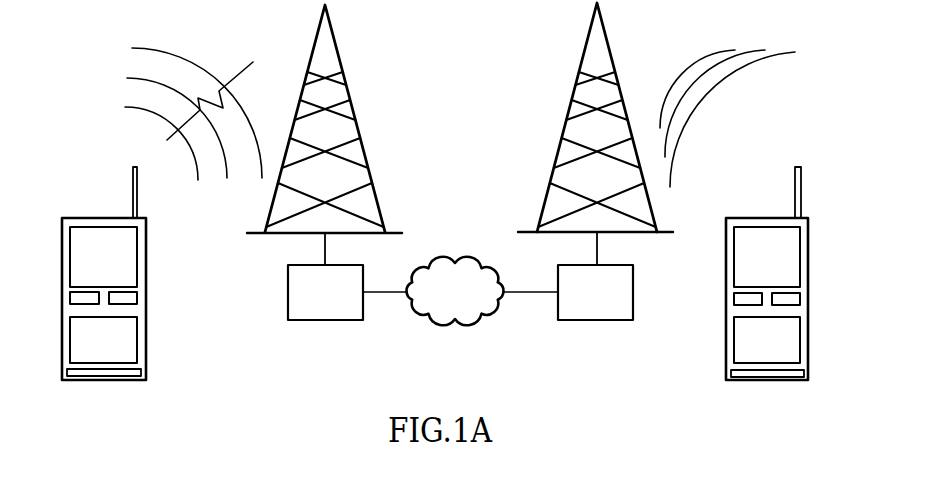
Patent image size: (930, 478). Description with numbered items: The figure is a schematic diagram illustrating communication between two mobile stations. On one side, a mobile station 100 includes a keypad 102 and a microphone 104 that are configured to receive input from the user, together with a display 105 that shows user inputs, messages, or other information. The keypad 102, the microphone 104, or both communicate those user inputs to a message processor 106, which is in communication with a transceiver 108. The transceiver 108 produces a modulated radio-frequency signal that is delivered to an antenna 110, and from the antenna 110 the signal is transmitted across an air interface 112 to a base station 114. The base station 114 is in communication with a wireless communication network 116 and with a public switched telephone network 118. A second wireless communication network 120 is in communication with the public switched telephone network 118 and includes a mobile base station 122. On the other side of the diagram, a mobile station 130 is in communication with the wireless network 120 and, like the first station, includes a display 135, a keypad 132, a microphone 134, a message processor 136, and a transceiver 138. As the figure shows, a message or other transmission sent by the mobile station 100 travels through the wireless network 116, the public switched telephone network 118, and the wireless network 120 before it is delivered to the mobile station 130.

The mobile station 100 is at (146, 243).
The keypad 102 is at (137, 336).
The microphone 104 is at (106, 376).
The display 105 is at (137, 262).
The message processor 106 is at (137, 297).
The transceiver 108 is at (70, 297).
The antenna 110 is at (133, 188).
The air interface 112 is at (234, 78).
The base station 114 is at (338, 56).
The wireless communication network 116 is at (328, 321).
The public switched telephone network (PSTN) 118 is at (442, 322).
The wireless communication network 120 is at (582, 321).
The mobile base station 122 is at (580, 61).
The mobile station 130 is at (808, 243).
The keypad 132 is at (800, 336).
The microphone 134 is at (770, 377).
The display 135 is at (800, 262).
The message processor 136 is at (800, 297).
The transceiver 138 is at (734, 297).